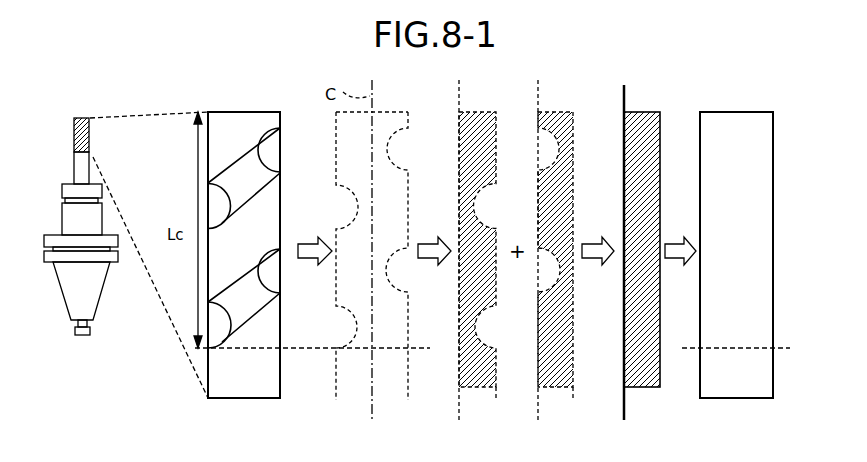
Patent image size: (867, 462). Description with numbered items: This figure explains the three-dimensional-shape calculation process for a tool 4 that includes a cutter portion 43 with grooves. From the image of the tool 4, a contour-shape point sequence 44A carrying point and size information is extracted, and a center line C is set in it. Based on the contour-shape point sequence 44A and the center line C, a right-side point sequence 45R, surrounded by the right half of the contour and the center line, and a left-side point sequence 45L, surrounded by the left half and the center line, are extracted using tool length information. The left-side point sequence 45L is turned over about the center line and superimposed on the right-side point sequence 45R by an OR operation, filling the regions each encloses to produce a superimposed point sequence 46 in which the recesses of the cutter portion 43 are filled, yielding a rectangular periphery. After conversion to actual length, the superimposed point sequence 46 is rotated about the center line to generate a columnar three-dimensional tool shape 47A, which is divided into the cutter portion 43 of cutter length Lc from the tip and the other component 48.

The tool 4 is at (80, 118).
The cutter portion 43 is at (284, 347).
The contour-shape point sequence 44A is at (388, 112).
The left-side point sequence 45L is at (474, 112).
The right-side point sequence 45R is at (552, 112).
The superimposed point sequence 46 is at (645, 112).
The three-dimensional tool shape 47A is at (734, 112).
The other component 48 is at (777, 351).